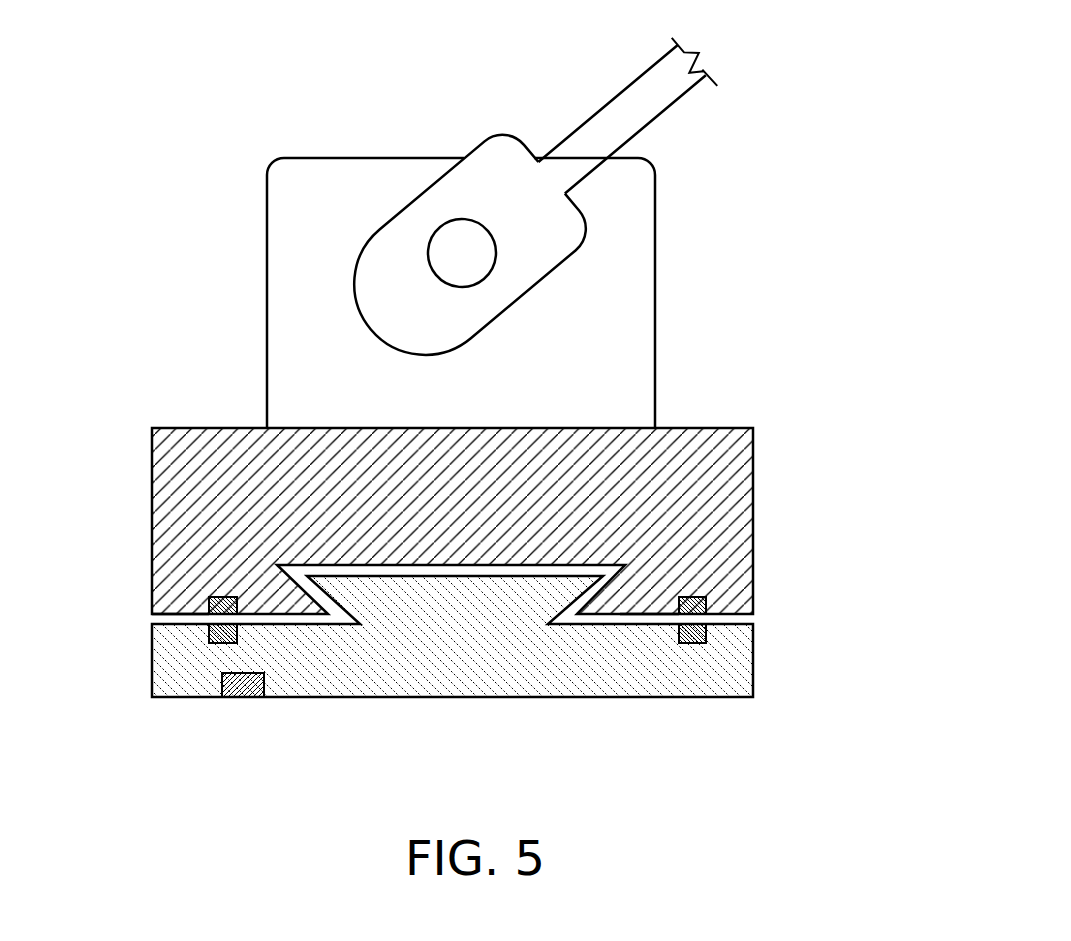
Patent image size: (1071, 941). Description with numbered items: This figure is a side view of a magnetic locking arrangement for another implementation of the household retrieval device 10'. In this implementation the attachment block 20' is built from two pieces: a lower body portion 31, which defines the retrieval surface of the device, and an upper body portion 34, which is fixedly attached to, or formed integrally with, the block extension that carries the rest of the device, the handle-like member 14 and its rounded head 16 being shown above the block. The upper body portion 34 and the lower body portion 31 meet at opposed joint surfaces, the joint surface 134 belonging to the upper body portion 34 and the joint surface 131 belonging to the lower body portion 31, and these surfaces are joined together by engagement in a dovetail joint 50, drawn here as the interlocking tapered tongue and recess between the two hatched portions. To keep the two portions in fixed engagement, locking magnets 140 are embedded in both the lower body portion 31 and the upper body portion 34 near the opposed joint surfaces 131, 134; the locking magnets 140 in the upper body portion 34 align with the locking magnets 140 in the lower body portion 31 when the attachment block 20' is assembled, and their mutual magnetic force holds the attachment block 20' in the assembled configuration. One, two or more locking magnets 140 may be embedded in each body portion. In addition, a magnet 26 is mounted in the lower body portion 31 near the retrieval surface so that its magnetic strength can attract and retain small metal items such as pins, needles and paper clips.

The household retrieval device 10' is at (538, 252).
The shaft 14 is at (607, 106).
The key head 16 is at (389, 221).
The attachment block 20' is at (538, 521).
The upper body portion 34 is at (150, 485).
The lower body portion 31 is at (167, 683).
The dovetail joint 50 is at (430, 698).
The magnet 26 is at (216, 698).
The locking magnets 140 is at (222, 596).
The joint surface 131 is at (191, 611).
The joint surface 134 is at (650, 628).